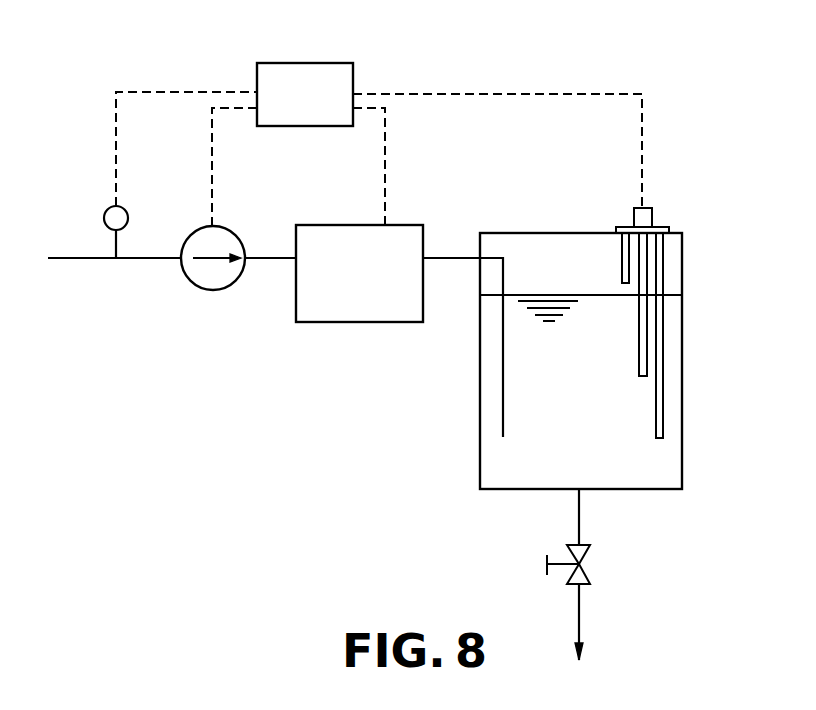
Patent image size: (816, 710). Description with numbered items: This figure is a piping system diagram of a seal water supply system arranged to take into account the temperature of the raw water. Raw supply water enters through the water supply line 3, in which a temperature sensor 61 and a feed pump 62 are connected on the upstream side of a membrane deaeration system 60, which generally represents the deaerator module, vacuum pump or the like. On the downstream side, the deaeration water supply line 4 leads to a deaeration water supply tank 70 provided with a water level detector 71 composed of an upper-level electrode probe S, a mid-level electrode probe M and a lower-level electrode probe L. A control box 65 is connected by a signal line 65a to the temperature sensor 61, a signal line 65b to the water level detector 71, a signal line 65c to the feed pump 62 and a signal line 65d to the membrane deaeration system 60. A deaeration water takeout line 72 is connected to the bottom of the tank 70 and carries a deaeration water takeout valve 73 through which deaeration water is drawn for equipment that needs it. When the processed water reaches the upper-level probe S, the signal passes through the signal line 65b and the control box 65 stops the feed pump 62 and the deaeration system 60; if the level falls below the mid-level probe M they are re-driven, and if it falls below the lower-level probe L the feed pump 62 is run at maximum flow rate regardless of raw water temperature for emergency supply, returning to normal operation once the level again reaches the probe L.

The water supply line 3 is at (62, 258).
The deaeration water supply line 4 is at (450, 257).
The membrane deaeration system 60 is at (351, 326).
The temperature sensor 61 is at (128, 212).
The feed pump 62 is at (213, 290).
The control box 65 is at (310, 63).
The signal line for the temperature sensor 65a is at (218, 68).
The signal line for the water level detector 65b is at (470, 70).
The signal line for the feed pump 65c is at (213, 152).
The signal line for the membrane deaeration system 65d is at (385, 137).
The deaeration water supply tank 70 is at (474, 444).
The water level detector 71 is at (652, 218).
The deaeration water takeout line 72 is at (579, 535).
The deaeration water takeout valve 73 is at (547, 555).
The upper-level electrode probe S is at (629, 258).
The mid-level electrode probe M is at (647, 314).
The lower-level electrode probe L is at (663, 373).